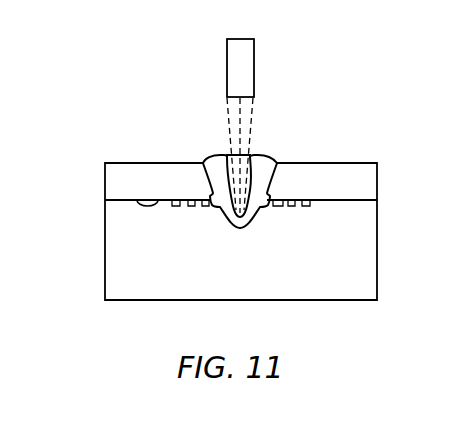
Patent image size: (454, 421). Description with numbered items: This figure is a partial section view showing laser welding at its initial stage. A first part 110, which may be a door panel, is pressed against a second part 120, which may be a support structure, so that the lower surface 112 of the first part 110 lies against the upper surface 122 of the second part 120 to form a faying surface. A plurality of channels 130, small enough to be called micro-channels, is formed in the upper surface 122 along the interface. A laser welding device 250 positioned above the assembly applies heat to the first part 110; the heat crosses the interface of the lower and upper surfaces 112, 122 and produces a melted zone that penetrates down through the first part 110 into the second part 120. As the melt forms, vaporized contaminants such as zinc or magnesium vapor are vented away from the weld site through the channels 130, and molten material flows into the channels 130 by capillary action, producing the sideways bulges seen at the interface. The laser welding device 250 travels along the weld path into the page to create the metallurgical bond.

The first part 110 is at (378, 177).
The lower surface 112 is at (158, 199).
The second part 120 is at (377, 287).
The upper surface 122 is at (132, 199).
The channels 130 is at (378, 200).
The laser welding device 250 is at (254, 69).